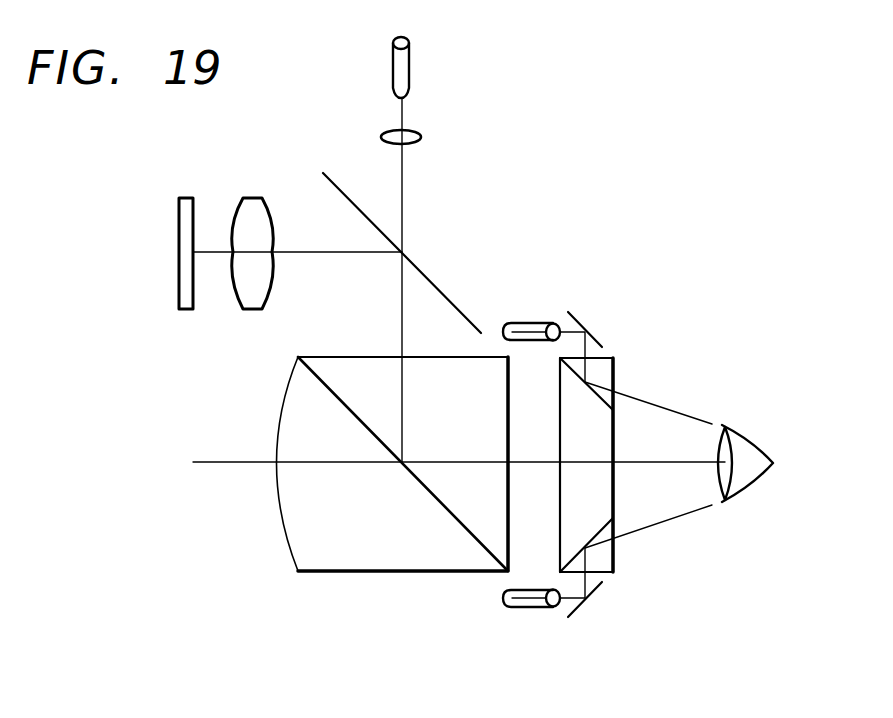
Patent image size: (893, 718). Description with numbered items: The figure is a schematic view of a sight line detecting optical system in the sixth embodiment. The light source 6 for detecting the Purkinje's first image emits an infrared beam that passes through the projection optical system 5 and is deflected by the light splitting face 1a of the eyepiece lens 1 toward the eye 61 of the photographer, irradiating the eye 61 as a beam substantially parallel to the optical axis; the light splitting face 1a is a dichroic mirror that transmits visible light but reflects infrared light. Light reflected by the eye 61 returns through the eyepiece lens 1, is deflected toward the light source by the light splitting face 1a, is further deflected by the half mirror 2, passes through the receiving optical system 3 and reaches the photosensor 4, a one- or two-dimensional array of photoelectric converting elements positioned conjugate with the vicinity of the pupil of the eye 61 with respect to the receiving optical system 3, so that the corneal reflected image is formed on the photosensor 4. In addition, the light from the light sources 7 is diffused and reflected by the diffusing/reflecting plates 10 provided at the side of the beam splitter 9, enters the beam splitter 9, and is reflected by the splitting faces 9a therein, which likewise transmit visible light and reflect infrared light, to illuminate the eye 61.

The eyepiece lens 1 is at (312, 563).
The light splitting face 1a is at (465, 532).
The half mirror 2 is at (443, 290).
The receiving optical system 3 is at (253, 197).
The photosensor 4 is at (183, 197).
The projection optical system 5 is at (421, 137).
The light source 6 is at (409, 60).
The light sources 7 is at (528, 326).
The beam splitter 9 is at (610, 560).
The splitting faces 9a is at (576, 378).
The diffusing/reflecting plates 10 is at (590, 316).
The eye 61 is at (748, 485).